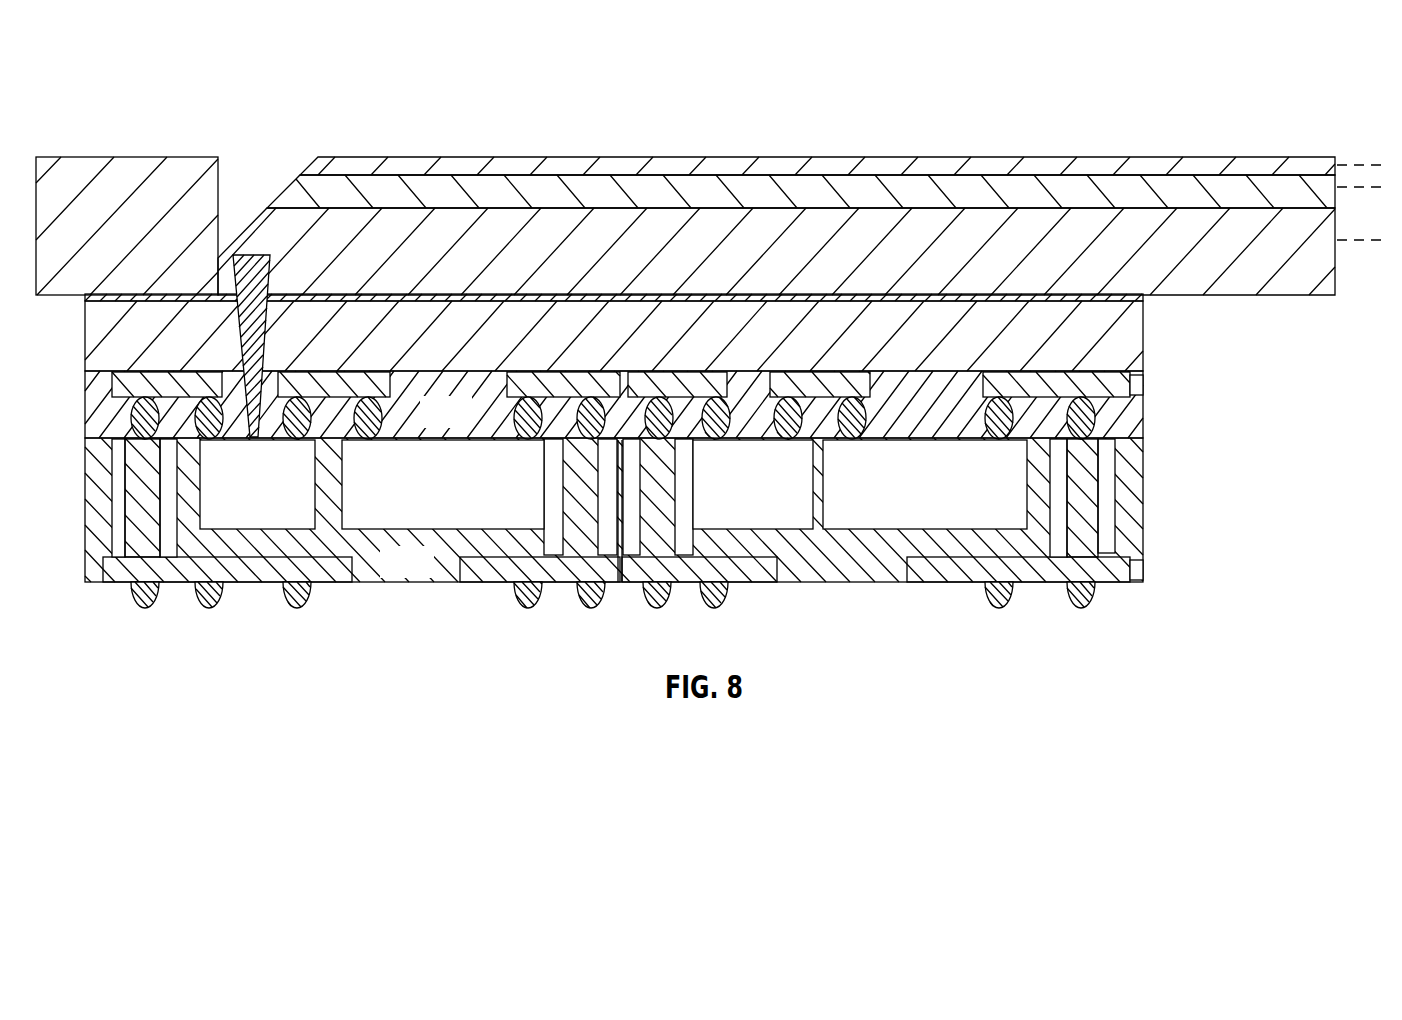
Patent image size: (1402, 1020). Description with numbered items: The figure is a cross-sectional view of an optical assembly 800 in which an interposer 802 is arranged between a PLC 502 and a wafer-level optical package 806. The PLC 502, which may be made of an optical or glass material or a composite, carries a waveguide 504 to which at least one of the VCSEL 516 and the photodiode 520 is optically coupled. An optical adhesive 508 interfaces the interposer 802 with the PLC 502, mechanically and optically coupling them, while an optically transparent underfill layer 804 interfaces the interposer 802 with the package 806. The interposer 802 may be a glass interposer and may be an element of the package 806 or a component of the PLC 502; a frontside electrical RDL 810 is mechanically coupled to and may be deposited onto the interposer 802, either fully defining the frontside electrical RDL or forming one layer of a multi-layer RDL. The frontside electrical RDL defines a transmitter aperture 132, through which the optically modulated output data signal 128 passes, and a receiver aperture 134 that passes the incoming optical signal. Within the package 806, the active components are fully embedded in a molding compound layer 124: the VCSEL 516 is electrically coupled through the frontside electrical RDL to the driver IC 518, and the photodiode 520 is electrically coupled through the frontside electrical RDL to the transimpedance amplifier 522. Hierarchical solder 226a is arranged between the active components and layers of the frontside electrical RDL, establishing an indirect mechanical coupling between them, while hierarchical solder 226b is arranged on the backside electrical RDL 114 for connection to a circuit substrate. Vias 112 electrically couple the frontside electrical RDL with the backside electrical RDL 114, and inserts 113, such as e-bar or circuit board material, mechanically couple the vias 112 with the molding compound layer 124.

The optical assembly 800 is at (701, 372).
The PLC 502 is at (148, 239).
The waveguide 504 is at (482, 212).
The optical adhesive 508 is at (1143, 296).
The interposer 802 is at (141, 339).
The underfill layer 804 is at (468, 425).
The frontside electrical RDL 810 is at (1133, 383).
The optically modulated output data signal 128 is at (270, 270).
The transmitter aperture 132 is at (237, 360).
The receiver aperture 134 is at (753, 362).
The hierarchical solder 226a is at (132, 426).
The hierarchical solder 226b is at (133, 590).
The inserts 113 is at (120, 478).
The vias 112 is at (1083, 480).
The backside electrical RDL 114 is at (1135, 569).
The molding compound layer 124 is at (428, 575).
The VCSEL 516 is at (278, 499).
The driver IC 518 is at (461, 499).
The photodiode 520 is at (773, 499).
The transimpedance amplifier 522 is at (943, 499).
The wafer-level optical package 806 is at (333, 637).